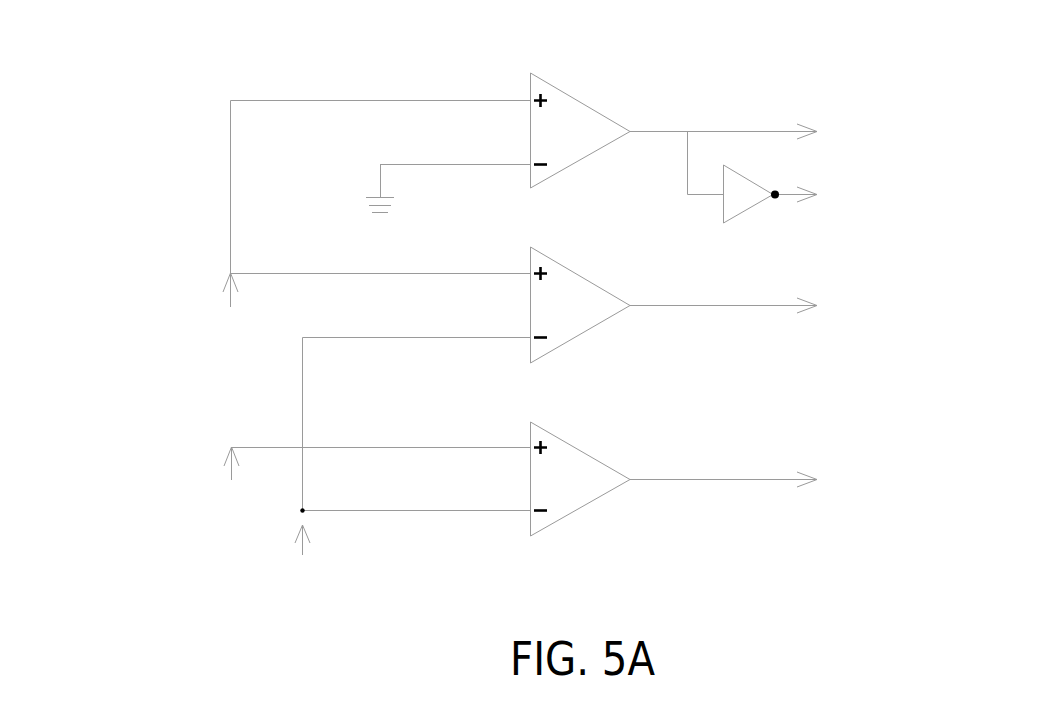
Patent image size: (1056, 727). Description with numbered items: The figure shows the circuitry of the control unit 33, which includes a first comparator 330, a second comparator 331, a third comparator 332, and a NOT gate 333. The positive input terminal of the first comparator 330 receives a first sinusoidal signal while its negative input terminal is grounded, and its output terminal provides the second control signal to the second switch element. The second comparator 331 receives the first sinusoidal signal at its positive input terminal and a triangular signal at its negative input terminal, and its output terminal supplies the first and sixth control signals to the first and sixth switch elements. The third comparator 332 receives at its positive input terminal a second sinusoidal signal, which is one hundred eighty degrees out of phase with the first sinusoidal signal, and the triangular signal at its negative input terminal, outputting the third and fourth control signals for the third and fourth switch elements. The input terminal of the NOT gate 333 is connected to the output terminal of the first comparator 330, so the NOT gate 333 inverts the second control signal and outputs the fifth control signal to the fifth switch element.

The control unit 33 is at (1036, 76).
The first comparator 330 is at (582, 100).
The second comparator 331 is at (582, 273).
The third comparator 332 is at (582, 447).
The NOT gate 333 is at (750, 210).